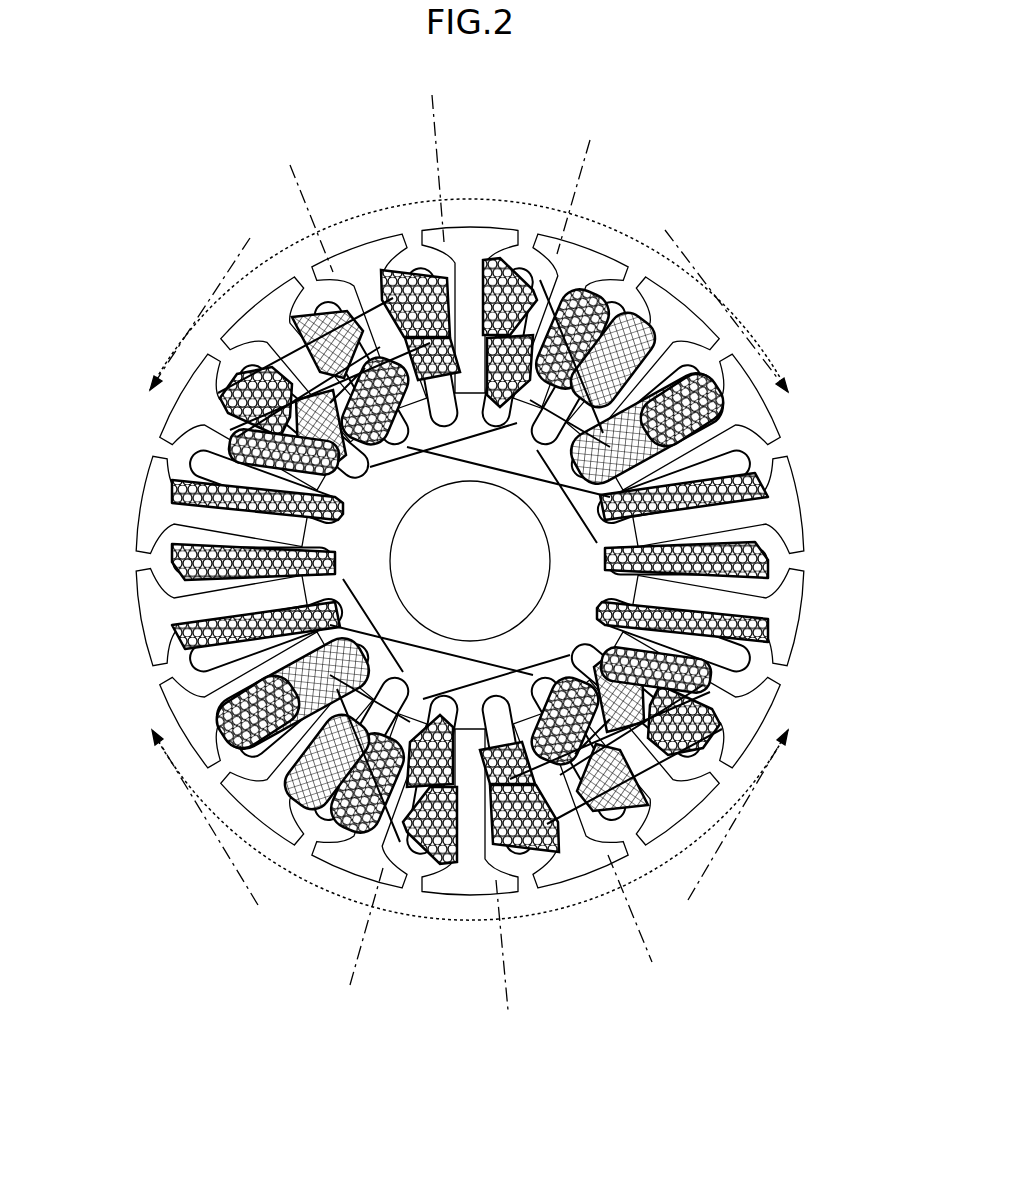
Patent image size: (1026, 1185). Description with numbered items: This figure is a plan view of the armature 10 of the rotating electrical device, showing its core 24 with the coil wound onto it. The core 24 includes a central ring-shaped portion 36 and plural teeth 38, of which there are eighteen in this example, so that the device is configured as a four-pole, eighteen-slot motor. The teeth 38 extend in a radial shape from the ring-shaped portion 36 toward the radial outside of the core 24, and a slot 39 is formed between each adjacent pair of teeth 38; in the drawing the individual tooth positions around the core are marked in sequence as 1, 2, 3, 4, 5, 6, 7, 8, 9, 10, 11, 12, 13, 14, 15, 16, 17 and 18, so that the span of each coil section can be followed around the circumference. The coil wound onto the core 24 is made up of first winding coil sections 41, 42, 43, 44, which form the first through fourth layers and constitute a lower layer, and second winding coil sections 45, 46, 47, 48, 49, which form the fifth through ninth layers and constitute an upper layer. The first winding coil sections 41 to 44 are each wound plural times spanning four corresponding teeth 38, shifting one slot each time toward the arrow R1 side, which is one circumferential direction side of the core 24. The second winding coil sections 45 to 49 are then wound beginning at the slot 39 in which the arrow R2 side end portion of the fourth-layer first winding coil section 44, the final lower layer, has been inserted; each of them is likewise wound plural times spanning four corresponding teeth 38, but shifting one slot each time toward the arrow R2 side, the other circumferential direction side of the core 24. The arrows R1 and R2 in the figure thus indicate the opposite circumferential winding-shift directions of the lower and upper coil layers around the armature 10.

The armature 10 is at (583, 118).
The core 24 is at (470, 471).
The ring-shaped portion 36 is at (378, 552).
The teeth 38 is at (470, 223).
The slot 39 is at (417, 262).
The first winding coil section 41 is at (416, 452).
The first winding coil section 42 is at (466, 432).
The first winding coil section 43 is at (507, 455).
The first winding coil section 44 is at (558, 503).
The second winding coil section 45 is at (475, 559).
The second winding coil section 46 is at (460, 543).
The second winding coil section 47 is at (477, 558).
The second winding coil section 48 is at (215, 295).
The second winding coil section 49 is at (150, 390).
The arrow R1 is at (695, 269).
The arrow R2 is at (245, 246).
The slot 1 is at (470, 812).
The slot 2 is at (384, 796).
The slot 3 is at (309, 753).
The slot 4 is at (253, 686).
The slot 5 is at (223, 604).
The slot 6 is at (223, 517).
The slot 7 is at (253, 435).
The slot 8 is at (309, 368).
The slot 9 is at (384, 325).
The slot 11 is at (555, 325).
The slot 12 is at (631, 368).
The slot 13 is at (687, 435).
The slot 14 is at (717, 517).
The slot 15 is at (717, 604).
The slot 16 is at (687, 686).
The slot 17 is at (631, 753).
The slot 18 is at (555, 796).